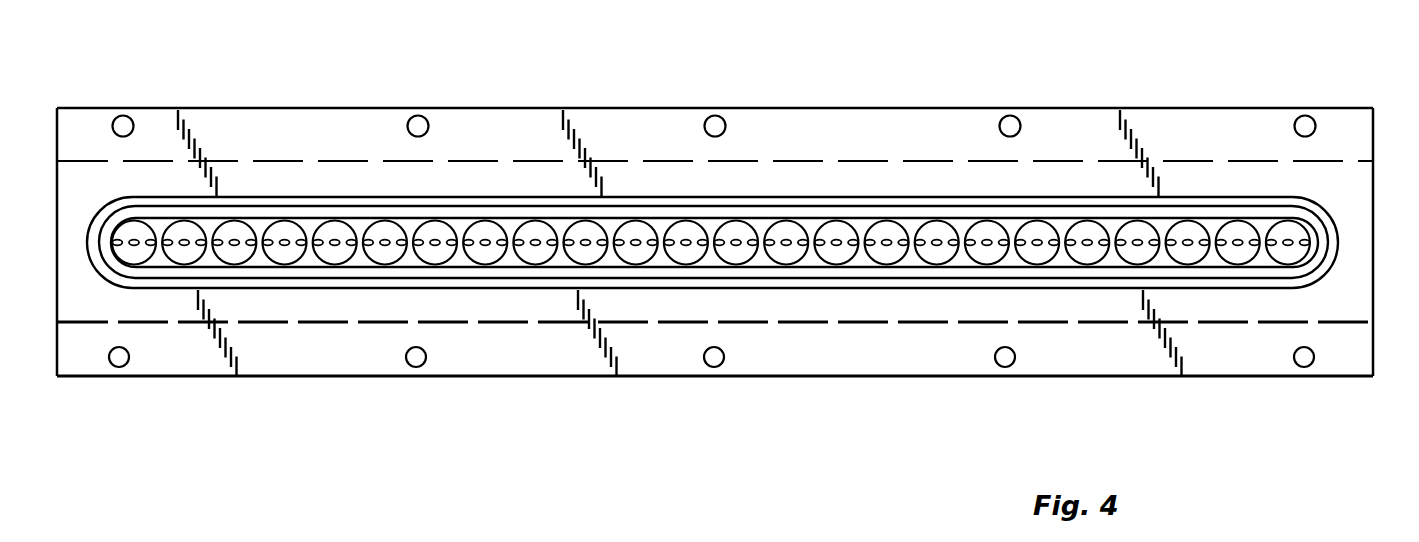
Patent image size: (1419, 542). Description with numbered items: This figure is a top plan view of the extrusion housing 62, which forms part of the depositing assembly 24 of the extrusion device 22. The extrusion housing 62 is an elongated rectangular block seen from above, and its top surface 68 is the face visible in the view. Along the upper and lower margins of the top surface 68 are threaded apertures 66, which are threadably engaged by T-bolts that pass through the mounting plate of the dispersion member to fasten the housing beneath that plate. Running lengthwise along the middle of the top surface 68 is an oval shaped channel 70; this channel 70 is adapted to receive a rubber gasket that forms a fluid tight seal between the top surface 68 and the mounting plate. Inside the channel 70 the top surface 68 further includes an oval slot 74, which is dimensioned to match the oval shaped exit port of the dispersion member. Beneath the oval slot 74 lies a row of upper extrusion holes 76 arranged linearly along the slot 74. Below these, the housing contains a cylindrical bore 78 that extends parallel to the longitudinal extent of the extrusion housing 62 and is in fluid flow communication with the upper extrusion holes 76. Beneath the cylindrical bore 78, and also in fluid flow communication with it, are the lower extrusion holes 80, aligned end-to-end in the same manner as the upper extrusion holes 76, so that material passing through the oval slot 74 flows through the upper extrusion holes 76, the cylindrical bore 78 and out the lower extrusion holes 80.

The extrusion device 22 is at (596, 100).
The depositing assembly 24 is at (55, 291).
The extrusion housing 62 is at (1375, 116).
The threaded apertures 66 is at (125, 113).
The top surface 68 is at (1155, 123).
The oval shaped channel 70 is at (1318, 272).
The oval slot 74 is at (865, 225).
The upper extrusion holes 76 is at (1297, 233).
The cylindrical bore 78 is at (1080, 178).
The lower extrusion holes 80 is at (298, 248).